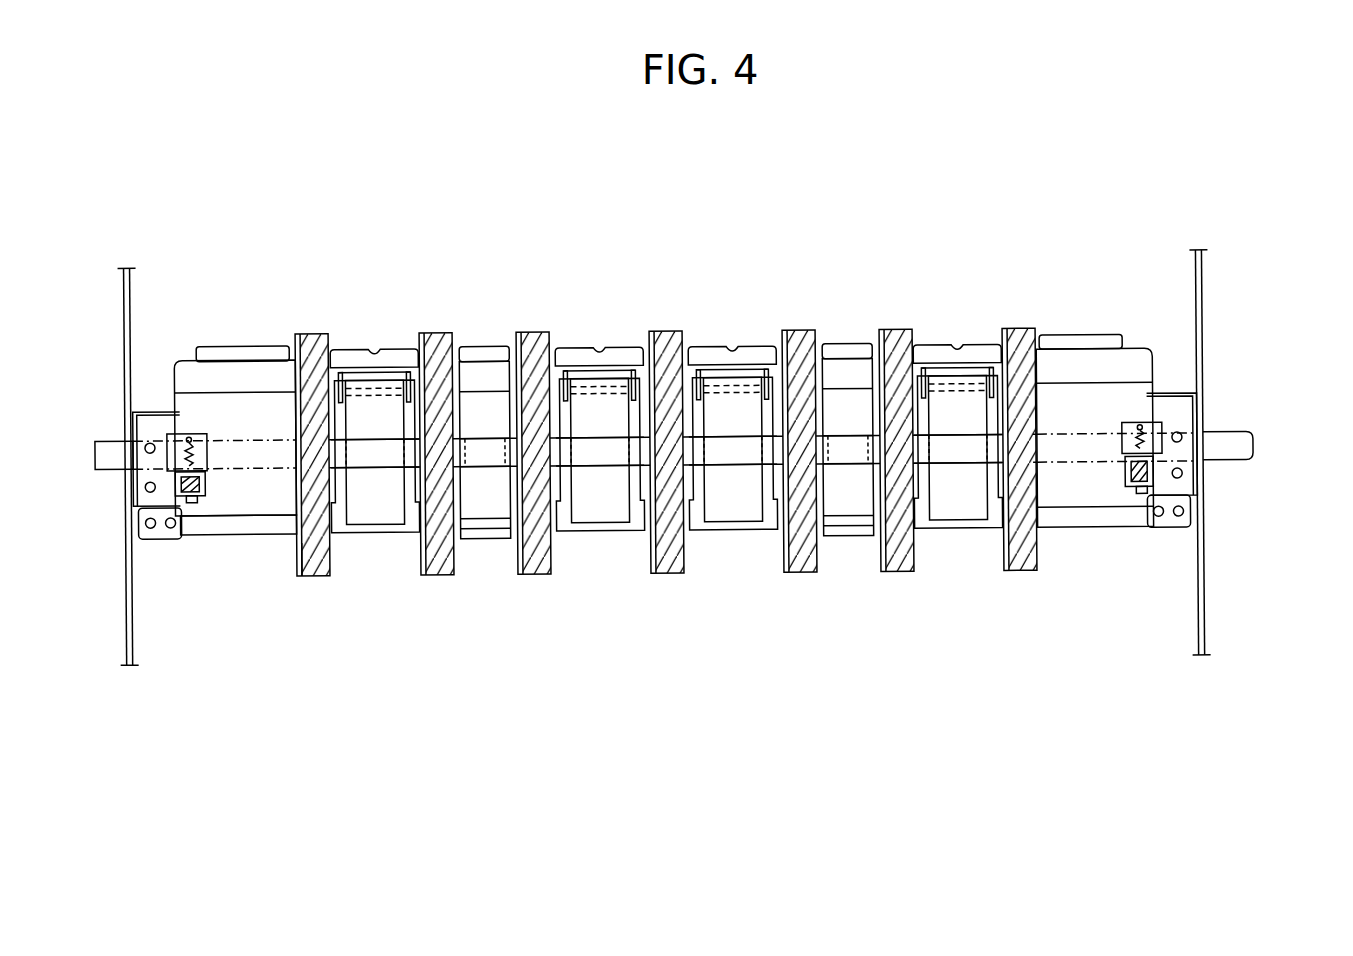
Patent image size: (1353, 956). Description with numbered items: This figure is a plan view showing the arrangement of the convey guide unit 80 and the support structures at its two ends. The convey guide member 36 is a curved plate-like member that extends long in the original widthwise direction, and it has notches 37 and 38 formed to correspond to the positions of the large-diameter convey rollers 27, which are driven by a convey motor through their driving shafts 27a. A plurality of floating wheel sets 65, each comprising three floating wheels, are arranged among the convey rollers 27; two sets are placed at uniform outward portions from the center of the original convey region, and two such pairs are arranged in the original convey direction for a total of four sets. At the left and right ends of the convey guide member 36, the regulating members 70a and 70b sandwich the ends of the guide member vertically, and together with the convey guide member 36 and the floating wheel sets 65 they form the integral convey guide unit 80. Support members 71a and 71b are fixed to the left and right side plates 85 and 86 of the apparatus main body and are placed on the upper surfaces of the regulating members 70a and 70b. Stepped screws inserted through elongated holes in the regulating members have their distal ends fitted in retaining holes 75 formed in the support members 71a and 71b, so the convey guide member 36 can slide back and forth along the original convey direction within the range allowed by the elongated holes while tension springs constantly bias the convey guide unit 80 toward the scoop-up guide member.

The convey rollers 27 is at (313, 574).
The driving shafts 27a is at (1232, 448).
The convey guide member 36 is at (251, 370).
The notch 37 is at (333, 341).
The notch 38 is at (296, 560).
The floating wheel sets 65 is at (387, 352).
The regulating member 70a is at (1135, 428).
The regulating member 70b is at (183, 436).
The support member 71a is at (1163, 533).
The support member 71b is at (160, 536).
The retaining holes 75 is at (147, 485).
The convey guide unit 80 is at (533, 258).
The side plate 85 is at (1203, 284).
The side plate 86 is at (125, 279).